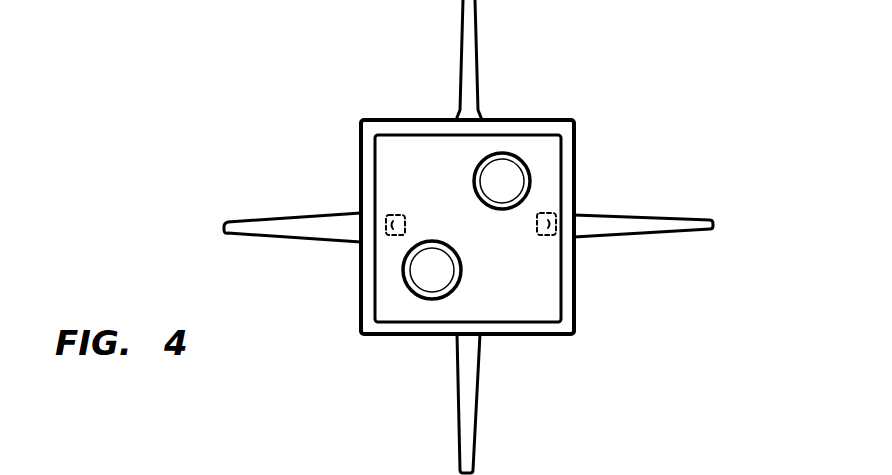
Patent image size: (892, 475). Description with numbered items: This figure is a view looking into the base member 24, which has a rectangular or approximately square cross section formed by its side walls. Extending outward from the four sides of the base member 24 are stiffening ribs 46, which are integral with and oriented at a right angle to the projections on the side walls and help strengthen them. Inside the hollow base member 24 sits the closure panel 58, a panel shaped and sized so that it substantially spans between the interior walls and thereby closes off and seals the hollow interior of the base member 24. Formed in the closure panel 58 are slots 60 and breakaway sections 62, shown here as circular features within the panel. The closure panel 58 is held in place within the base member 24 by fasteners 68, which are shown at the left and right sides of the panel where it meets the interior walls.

The base member 24 is at (622, 297).
The stiffening ribs 46 is at (472, 34).
The closure panel 58 is at (421, 178).
The slots 60 is at (512, 207).
The breakaway sections 62 is at (515, 196).
The fasteners 68 is at (556, 220).